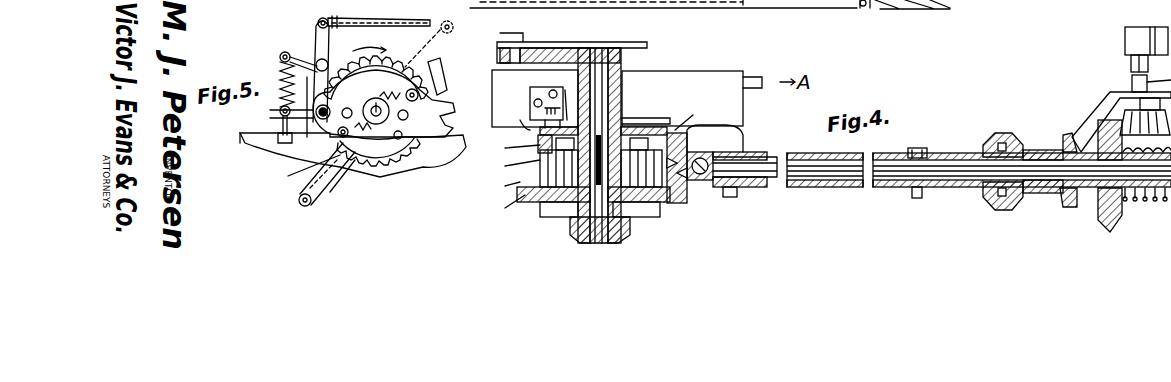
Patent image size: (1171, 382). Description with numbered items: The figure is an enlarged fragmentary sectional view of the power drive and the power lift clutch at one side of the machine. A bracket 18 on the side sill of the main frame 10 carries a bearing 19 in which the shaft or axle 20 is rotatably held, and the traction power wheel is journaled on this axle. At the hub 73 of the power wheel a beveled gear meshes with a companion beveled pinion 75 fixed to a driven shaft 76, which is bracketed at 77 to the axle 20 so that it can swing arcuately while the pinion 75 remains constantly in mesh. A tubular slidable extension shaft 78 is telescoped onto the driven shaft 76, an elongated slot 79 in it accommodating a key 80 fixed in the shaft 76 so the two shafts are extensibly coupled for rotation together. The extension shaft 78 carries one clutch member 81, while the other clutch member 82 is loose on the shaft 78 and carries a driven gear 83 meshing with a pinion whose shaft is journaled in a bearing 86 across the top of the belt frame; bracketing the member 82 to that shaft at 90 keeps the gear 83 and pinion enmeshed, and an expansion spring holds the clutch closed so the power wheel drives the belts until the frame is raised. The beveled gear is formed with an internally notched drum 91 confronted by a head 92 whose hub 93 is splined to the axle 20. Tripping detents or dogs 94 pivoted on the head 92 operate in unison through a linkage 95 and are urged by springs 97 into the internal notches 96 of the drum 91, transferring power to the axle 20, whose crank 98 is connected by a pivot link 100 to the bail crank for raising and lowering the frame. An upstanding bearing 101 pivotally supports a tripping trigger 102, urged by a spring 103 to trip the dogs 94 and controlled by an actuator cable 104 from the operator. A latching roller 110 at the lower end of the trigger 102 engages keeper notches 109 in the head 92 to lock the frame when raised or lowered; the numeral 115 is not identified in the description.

In FIG. 4, the main frame 10 is at (765, 80).
In FIG. 5, the bracket 18 is at (245, 142).
In FIG. 4, the bracket 18 is at (705, 76).
In FIG. 4, the bearing 19 is at (630, 74).
In FIG. 4, the shaft or axle 20 is at (605, 104).
In FIG. 4, the hub 73 is at (630, 238).
In FIG. 4, the beveled pinion 75 is at (700, 200).
In FIG. 4, the driven shaft 76 is at (800, 190).
In FIG. 5, the bracket 77 is at (447, 104).
In FIG. 4, the bracket 77 is at (530, 202).
In FIG. 4, the tubular slidable extension shaft 78 is at (860, 190).
In FIG. 4, the elongated slot 79 is at (912, 150).
In FIG. 4, the key 80 is at (930, 153).
In FIG. 4, the clutch member 81 is at (1000, 133).
In FIG. 4, the clutch member 82 is at (1020, 150).
In FIG. 4, the driven gear 83 is at (1112, 226).
In FIG. 4, the bearing 86 is at (1128, 41).
In FIG. 4, the bracket 90 is at (1080, 125).
In FIG. 5, the internally notched drum 91 is at (420, 175).
In FIG. 5, the head 92 is at (380, 80).
In FIG. 4, the head 92 is at (630, 113).
In FIG. 5, the hub 93 is at (372, 99).
In FIG. 4, the hub 93 is at (570, 205).
In FIG. 5, the tripping detents or dogs 94 is at (428, 95).
In FIG. 4, the tripping detents or dogs 94 is at (540, 150).
In FIG. 5, the linkage 95 is at (382, 158).
In FIG. 4, the linkage 95 is at (645, 192).
In FIG. 5, the internal notches 96 is at (365, 175).
In FIG. 4, the internal notches 96 is at (665, 197).
In FIG. 5, the springs 97 is at (440, 60).
In FIG. 5, the crank 98 is at (452, 30).
In FIG. 4, the crank 98 is at (550, 50).
In FIG. 4, the pivot link 100 is at (610, 43).
In FIG. 5, the upstanding bearing 101 is at (330, 62).
In FIG. 4, the upstanding bearing 101 is at (530, 93).
In FIG. 5, the tripping trigger 102 is at (318, 46).
In FIG. 4, the tripping trigger 102 is at (532, 118).
In FIG. 5, the spring 103 is at (280, 57).
In FIG. 5, the actuator cable 104 is at (405, 21).
In FIG. 4, the actuator cable 104 is at (546, 100).
In FIG. 5, the keeper notches 109 is at (275, 117).
In FIG. 4, the keeper notches 109 is at (690, 112).
In FIG. 5, the latching roller 110 is at (300, 150).
In FIG. 4, the frame member 115 is at (486, 5).